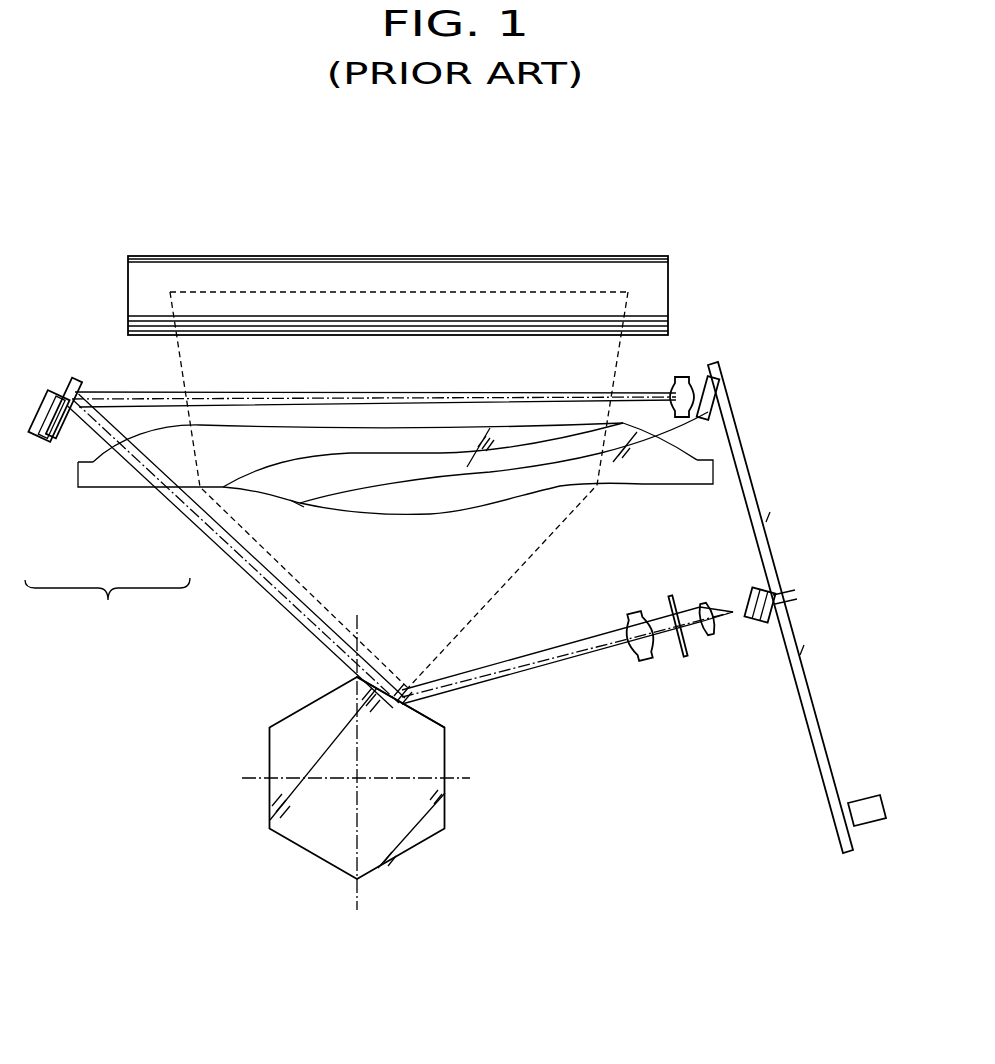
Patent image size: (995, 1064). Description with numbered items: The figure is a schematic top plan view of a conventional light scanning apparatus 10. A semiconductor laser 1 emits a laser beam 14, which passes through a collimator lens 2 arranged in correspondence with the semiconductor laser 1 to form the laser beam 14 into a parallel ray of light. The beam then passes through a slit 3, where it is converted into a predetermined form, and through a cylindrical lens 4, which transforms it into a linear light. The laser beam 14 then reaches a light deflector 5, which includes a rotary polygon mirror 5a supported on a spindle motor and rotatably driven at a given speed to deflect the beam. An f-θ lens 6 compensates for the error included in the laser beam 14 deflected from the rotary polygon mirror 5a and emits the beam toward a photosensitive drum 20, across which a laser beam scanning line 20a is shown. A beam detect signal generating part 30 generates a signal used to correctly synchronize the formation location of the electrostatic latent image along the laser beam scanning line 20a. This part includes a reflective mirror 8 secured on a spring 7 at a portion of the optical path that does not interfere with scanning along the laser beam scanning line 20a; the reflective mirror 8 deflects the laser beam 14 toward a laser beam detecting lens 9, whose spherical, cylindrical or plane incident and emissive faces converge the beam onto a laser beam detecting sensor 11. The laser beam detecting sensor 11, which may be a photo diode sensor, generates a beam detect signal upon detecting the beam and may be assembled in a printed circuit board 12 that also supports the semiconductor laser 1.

The semiconductor laser 1 is at (760, 584).
The collimator lens 2 is at (704, 602).
The slit 3 is at (670, 598).
The cylindrical lens 4 is at (625, 614).
The light deflector 5 is at (458, 820).
The rotary polygon mirror 5a is at (434, 718).
The f-θ lens 6 is at (415, 502).
The spring 7 is at (40, 432).
The reflective mirror 8 is at (62, 440).
The laser beam detecting lens 9 is at (223, 487).
The light scanning apparatus 10 is at (97, 223).
The laser beam detecting sensor 11 is at (300, 503).
The printed circuit board 12 is at (763, 528).
The laser beam 14 is at (548, 648).
The photosensitive drum 20 is at (455, 268).
The laser beam scanning line 20a is at (545, 291).
The beam detect signal generating part 30 is at (107, 602).